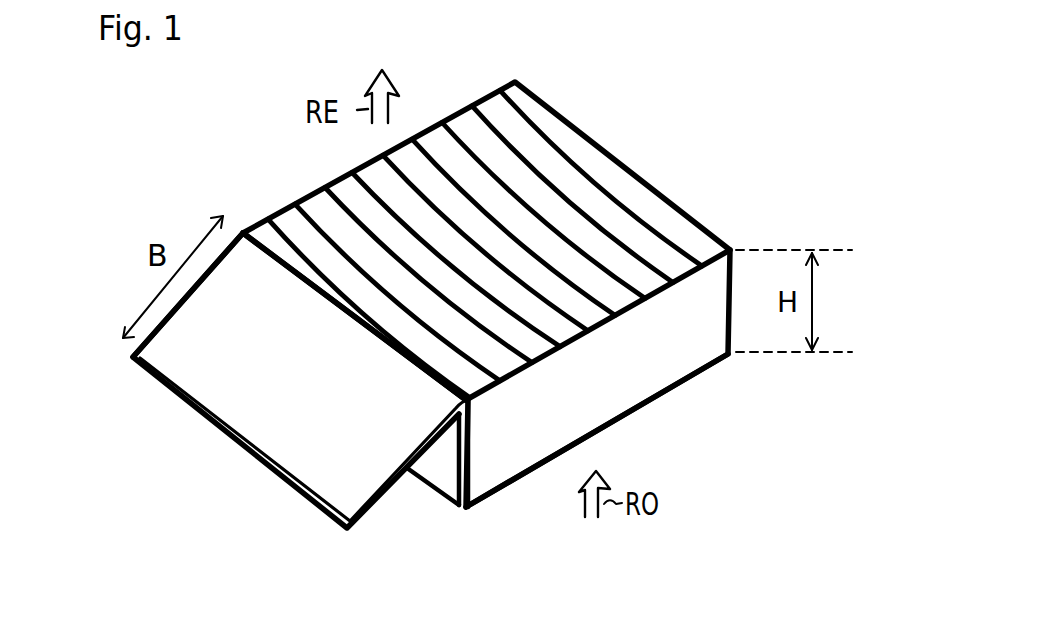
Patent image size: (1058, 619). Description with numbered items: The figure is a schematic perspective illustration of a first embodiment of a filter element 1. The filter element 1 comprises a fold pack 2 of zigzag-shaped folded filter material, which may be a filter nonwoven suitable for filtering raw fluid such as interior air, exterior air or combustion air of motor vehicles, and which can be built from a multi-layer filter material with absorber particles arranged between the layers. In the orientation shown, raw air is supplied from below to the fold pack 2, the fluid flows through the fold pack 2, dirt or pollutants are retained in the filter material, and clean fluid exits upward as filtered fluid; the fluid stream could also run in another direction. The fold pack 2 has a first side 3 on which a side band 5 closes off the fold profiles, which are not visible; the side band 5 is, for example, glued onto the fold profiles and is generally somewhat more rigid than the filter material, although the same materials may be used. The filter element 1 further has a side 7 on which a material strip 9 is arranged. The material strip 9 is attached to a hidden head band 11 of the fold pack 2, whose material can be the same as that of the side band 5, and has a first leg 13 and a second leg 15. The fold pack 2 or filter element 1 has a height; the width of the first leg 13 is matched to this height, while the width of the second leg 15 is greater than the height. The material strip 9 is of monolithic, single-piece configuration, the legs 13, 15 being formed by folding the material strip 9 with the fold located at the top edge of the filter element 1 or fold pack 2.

The filter element 1 is at (412, 338).
The fold pack 2 is at (557, 171).
The first side 3 is at (694, 406).
The side band 5 is at (708, 360).
The side 7 is at (430, 522).
The material strip 9 is at (120, 311).
The head band 11 is at (466, 507).
The first leg 13 is at (434, 497).
The second leg 15 is at (279, 480).